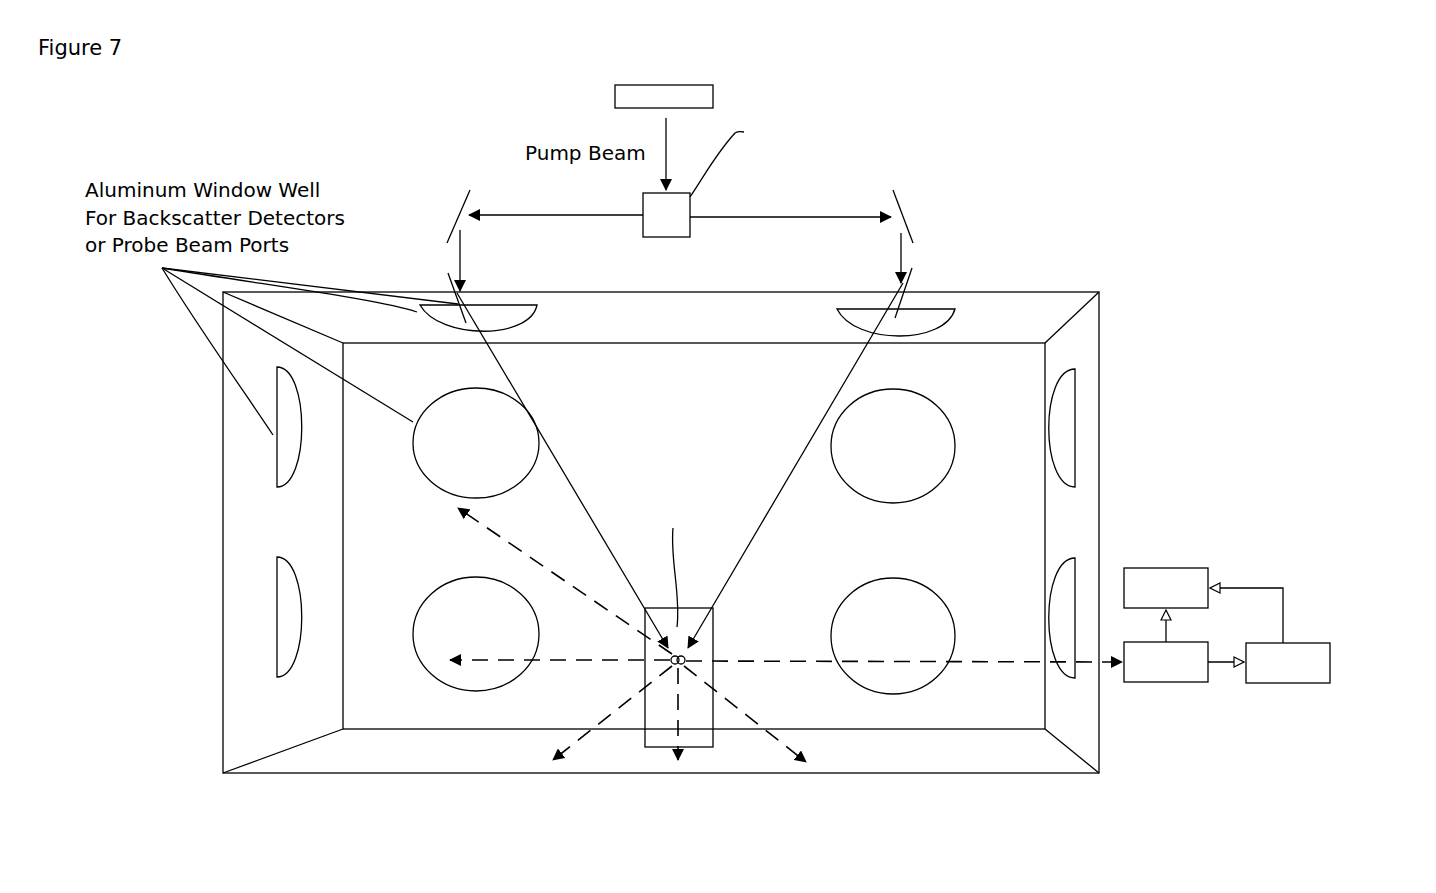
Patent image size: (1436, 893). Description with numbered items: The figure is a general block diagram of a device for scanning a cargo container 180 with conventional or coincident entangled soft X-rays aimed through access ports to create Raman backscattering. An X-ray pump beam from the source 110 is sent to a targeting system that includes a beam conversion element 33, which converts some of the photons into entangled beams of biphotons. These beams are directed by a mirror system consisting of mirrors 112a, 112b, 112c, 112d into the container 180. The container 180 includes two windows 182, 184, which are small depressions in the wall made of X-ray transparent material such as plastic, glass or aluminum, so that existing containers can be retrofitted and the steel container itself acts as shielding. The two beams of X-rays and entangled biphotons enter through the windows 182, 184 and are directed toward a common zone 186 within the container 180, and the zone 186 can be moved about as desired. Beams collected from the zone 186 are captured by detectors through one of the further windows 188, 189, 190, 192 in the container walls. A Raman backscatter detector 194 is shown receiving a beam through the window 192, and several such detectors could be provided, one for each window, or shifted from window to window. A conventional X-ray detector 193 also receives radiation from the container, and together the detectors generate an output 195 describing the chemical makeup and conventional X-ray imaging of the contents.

The source 110 is at (649, 81).
The beam conversion element 33 is at (854, 182).
The mirror 112a is at (439, 216).
The mirror 112b is at (925, 216).
The mirror 112c is at (933, 291).
The mirror 112d is at (429, 294).
The cargo container 180 is at (325, 847).
The window 182 is at (498, 319).
The window 184 is at (916, 322).
The common zone 186 is at (689, 597).
The window 188 is at (306, 429).
The window 189 is at (1066, 442).
The window 190 is at (306, 618).
The window 192 is at (1066, 634).
The X-ray detector 193 is at (1172, 715).
The Raman backscatter detector 194 is at (1288, 720).
The output 195 is at (1177, 522).